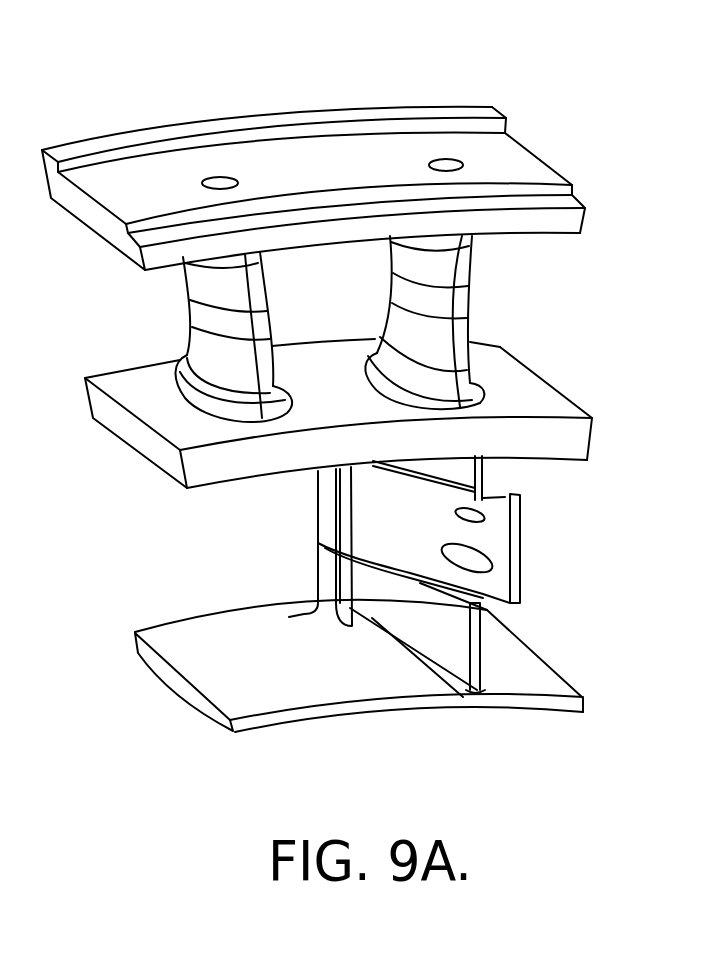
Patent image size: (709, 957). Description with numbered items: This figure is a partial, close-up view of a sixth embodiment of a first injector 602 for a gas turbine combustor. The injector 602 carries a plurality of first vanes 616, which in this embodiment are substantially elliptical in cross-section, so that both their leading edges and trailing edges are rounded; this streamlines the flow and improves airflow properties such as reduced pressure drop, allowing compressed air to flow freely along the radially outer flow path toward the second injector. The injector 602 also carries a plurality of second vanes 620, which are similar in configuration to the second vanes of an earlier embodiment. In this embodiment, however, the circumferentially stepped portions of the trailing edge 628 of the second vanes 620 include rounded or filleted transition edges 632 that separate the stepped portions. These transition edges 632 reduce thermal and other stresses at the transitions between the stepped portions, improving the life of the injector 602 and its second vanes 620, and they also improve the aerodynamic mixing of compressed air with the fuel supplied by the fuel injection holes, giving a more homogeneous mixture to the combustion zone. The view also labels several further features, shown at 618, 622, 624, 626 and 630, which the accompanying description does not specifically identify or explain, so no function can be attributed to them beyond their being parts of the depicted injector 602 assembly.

The first injector 602 is at (178, 118).
The first vanes 616 is at (208, 283).
The strut 618 is at (313, 295).
The second vanes 620 is at (445, 473).
The lower plate 622 is at (258, 570).
The hole 624 is at (445, 163).
The holes 626 is at (475, 563).
The trailing edge 628 is at (473, 650).
The bracket 630 is at (327, 493).
The rounded or filleted transition edges 632 is at (423, 477).